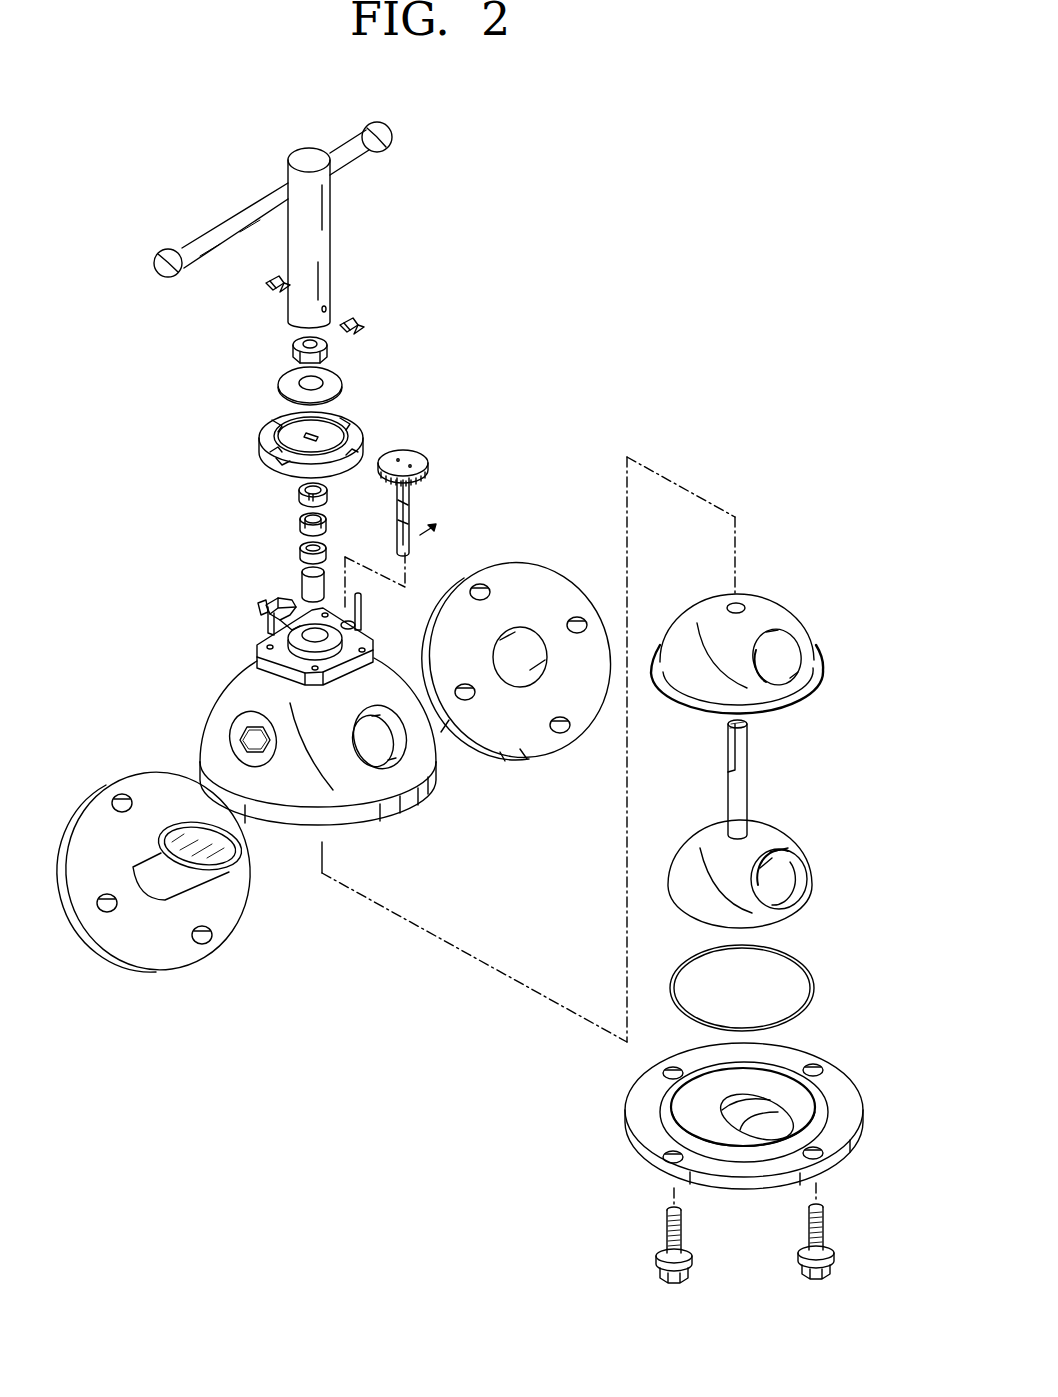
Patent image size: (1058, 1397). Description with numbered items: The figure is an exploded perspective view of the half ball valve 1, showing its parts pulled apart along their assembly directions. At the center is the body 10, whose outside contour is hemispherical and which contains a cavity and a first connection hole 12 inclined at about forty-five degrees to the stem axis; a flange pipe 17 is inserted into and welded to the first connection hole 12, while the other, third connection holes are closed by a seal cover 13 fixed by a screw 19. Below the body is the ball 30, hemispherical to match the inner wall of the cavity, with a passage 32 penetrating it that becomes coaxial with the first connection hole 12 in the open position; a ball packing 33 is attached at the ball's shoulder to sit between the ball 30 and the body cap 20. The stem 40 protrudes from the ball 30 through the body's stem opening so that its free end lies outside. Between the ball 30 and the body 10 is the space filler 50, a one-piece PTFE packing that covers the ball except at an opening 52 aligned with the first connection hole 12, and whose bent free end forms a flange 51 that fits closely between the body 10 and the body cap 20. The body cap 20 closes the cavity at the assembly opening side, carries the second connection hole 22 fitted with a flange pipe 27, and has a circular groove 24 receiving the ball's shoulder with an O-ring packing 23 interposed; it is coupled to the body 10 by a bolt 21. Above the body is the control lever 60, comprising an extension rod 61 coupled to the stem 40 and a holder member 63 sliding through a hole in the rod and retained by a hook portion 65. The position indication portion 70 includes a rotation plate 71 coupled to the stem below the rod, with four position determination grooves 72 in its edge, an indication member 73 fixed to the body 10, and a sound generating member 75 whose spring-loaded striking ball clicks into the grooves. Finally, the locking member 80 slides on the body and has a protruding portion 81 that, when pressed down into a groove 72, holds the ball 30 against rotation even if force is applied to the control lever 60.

The half ball valve 1 is at (567, 321).
The body 10 is at (227, 692).
The first connection hole 12 is at (383, 767).
The seal cover 13 is at (243, 720).
The flange pipe 17 is at (520, 747).
The screw 19 is at (248, 737).
The body cap 20 is at (825, 1040).
The bolt 21 is at (797, 1258).
The second connection hole 22 is at (738, 1118).
The O-ring packing 23 is at (812, 977).
The groove 24 is at (710, 1070).
The flange pipe 27 is at (240, 917).
The ball 30 is at (780, 831).
The passage 32 is at (792, 872).
The ball packing 33 is at (327, 583).
The stem 40 is at (750, 777).
The space filler 50 is at (773, 608).
The flange 51 is at (797, 697).
The opening 52 is at (787, 670).
The control lever 60 is at (453, 70).
The extension rod 61 is at (322, 237).
The holder member 63 is at (340, 142).
The hook portion 65 is at (389, 135).
The position indication portion 70 is at (188, 472).
The rotation plate 71 is at (267, 450).
The position determination grooves 72 is at (272, 468).
The indication member 73 is at (277, 603).
The sound generating member 75 is at (263, 607).
The locking member 80 is at (427, 452).
The protruding portion 81 is at (410, 497).